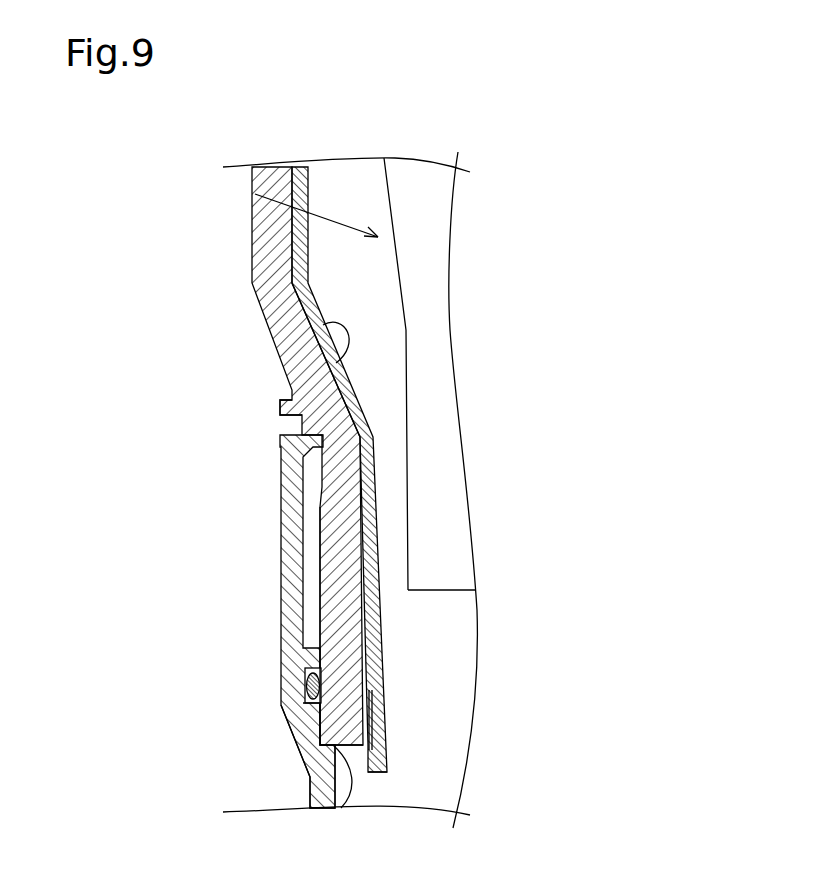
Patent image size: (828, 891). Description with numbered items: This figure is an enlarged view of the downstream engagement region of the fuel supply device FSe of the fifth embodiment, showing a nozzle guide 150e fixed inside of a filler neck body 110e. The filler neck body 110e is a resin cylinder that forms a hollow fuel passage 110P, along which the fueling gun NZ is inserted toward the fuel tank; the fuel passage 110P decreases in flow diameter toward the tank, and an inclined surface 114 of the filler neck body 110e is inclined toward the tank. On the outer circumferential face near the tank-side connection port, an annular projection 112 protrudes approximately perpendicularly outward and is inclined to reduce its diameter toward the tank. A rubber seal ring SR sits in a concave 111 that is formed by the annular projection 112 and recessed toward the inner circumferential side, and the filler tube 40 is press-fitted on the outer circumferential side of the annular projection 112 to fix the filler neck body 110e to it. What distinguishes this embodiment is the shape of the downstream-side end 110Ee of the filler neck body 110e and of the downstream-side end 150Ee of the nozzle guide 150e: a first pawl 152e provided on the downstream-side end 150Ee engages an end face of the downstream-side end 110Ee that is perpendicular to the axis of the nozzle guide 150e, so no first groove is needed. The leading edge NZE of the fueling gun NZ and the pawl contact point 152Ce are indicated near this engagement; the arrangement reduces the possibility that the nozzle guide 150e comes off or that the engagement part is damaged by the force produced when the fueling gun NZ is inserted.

The fuel passage 110P is at (255, 194).
The filler neck body 110e is at (262, 256).
The inclined surface 114 is at (292, 370).
The annular projection 112 is at (298, 525).
The filler tube 40 is at (283, 585).
The seal ring SR is at (307, 682).
The concave 111 is at (313, 727).
The downstream-side end 110Ee is at (310, 775).
The first pawl 152e is at (350, 806).
The fuel supply device FSe is at (600, 193).
The fueling gun NZ is at (440, 312).
The nozzle guide 150e is at (375, 527).
The nozzle edge NZE is at (450, 593).
The center of opening 152Ce is at (385, 702).
The downstream-side end 150Ee is at (373, 775).